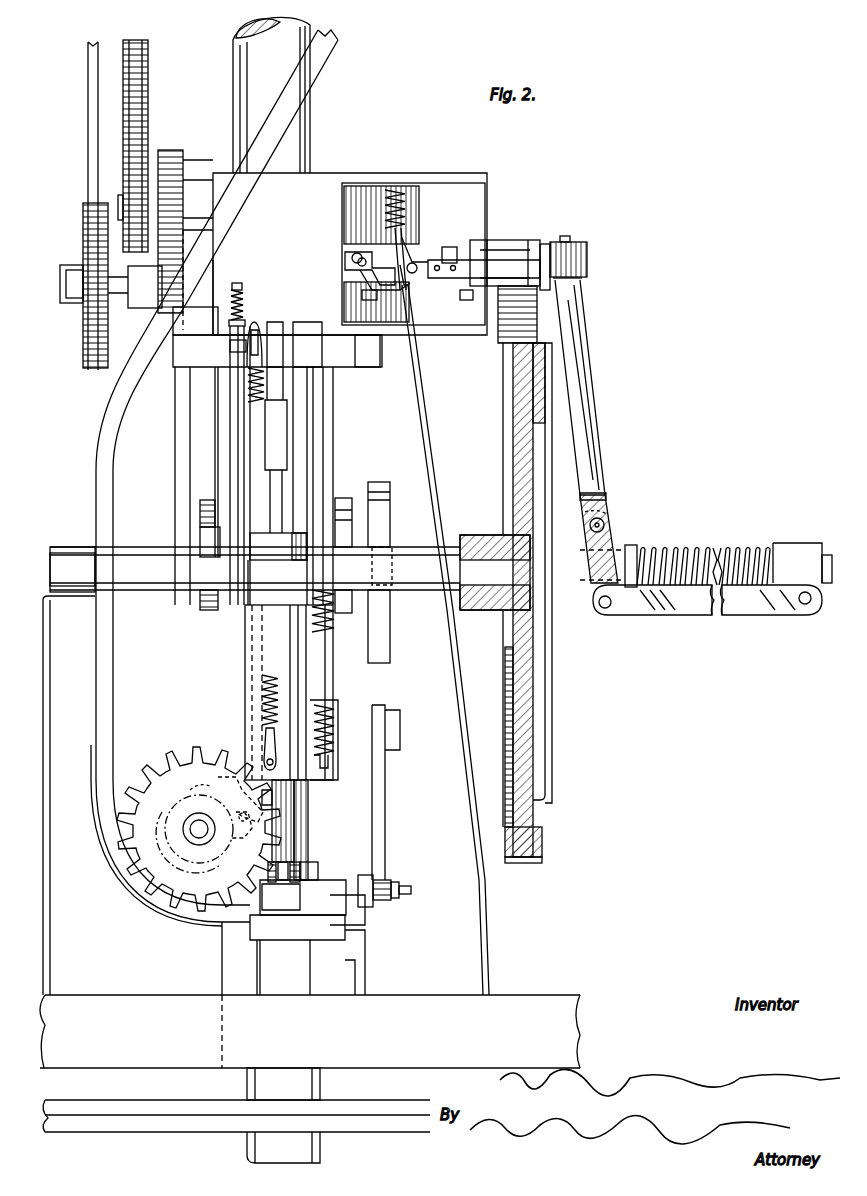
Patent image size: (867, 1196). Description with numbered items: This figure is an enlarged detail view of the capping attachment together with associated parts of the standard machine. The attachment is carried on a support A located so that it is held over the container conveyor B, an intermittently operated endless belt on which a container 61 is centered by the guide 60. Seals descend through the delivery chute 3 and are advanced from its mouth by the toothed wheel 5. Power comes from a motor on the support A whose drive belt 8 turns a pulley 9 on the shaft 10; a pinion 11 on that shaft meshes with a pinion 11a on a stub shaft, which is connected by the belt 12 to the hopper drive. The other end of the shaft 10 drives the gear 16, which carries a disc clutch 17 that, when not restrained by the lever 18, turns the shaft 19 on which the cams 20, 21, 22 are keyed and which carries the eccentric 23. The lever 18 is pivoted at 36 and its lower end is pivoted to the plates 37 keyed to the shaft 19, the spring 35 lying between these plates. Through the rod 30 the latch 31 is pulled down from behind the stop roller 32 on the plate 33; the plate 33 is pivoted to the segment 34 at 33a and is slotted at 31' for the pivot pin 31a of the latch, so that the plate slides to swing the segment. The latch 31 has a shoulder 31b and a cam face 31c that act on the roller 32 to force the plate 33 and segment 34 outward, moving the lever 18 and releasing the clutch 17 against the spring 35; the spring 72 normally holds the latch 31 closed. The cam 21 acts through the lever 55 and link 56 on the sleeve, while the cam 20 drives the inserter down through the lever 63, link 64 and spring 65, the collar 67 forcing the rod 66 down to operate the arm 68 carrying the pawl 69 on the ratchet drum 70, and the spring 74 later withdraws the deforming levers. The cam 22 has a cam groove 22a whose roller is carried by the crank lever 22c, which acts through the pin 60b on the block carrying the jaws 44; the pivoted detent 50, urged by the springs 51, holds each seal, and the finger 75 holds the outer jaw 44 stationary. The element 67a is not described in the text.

The support A is at (233, 60).
The container conveyor B is at (310, 1063).
The delivery chute 3 is at (96, 466).
The toothed wheel 5 is at (158, 872).
The drive belt 8 is at (88, 144).
The pulley 9 is at (83, 330).
The shaft 10 is at (60, 290).
The pinion 11 is at (155, 300).
The pinion 11a is at (178, 165).
The belt 12 is at (148, 95).
The gear 16 is at (510, 408).
The disc clutch 17 is at (540, 410).
The lever 18 is at (578, 388).
The shaft 19 is at (170, 570).
The cam 20 is at (200, 512).
The cam 21 is at (342, 500).
The cam 22 is at (388, 495).
The cam groove 22a is at (393, 547).
The crank lever 22c is at (380, 795).
The eccentric 23 is at (76, 547).
The rod 30 is at (466, 735).
The latch 31 is at (396, 267).
The slot 31' is at (327, 249).
The pivot pin 31a is at (355, 264).
The shoulder 31b is at (425, 272).
The cam face 31c is at (404, 240).
The stop roller 32 is at (414, 262).
The plate 33 is at (442, 262).
The pivot 33a is at (520, 268).
The segment 34 is at (548, 246).
The spring 35 is at (700, 548).
The pivot 36 is at (606, 521).
The plates 37 is at (695, 612).
The jaws 44 is at (270, 912).
The pivoted detent 50 is at (292, 862).
The springs 51 is at (315, 872).
The lever 55 is at (320, 412).
The link 56 is at (308, 440).
The guide 60 is at (320, 950).
The pin 60b is at (392, 905).
The container 61 is at (270, 963).
The lever 63 is at (230, 422).
The link 64 is at (272, 386).
The spring 65 is at (250, 672).
The rod 66 is at (244, 448).
The collar 67 is at (243, 320).
The clamp 67a is at (232, 352).
The arm 68 is at (243, 837).
The pawl 69 is at (232, 783).
The ratchet drum 70 is at (190, 779).
The spring 72 is at (395, 188).
The spring 74 is at (322, 705).
The finger 75 is at (330, 920).